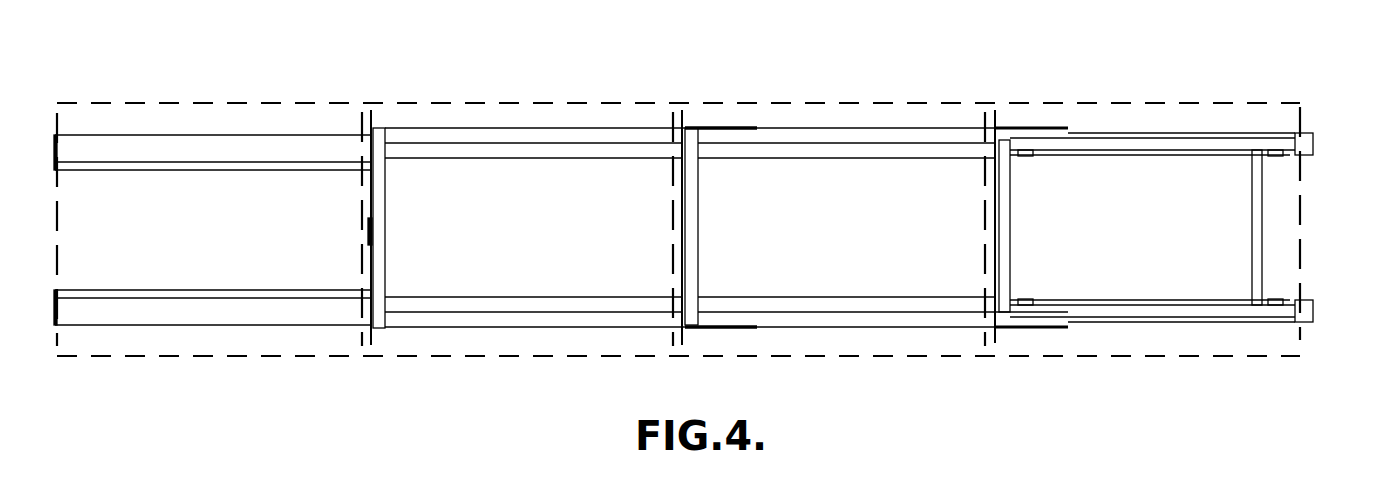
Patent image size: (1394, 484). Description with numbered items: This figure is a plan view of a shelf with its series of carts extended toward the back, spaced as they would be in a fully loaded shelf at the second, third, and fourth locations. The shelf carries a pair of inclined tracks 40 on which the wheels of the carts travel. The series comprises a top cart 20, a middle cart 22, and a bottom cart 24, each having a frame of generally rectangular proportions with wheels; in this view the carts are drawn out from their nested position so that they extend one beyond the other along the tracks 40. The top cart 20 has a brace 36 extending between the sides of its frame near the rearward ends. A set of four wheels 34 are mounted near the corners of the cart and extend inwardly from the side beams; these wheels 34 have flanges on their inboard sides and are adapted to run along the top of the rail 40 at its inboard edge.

The top cart 20 is at (1167, 128).
The middle cart 22 is at (793, 128).
The bottom cart 24 is at (422, 128).
The wheels 34 is at (1278, 157).
The brace 36 is at (1262, 205).
The inclined tracks 40 is at (195, 155).